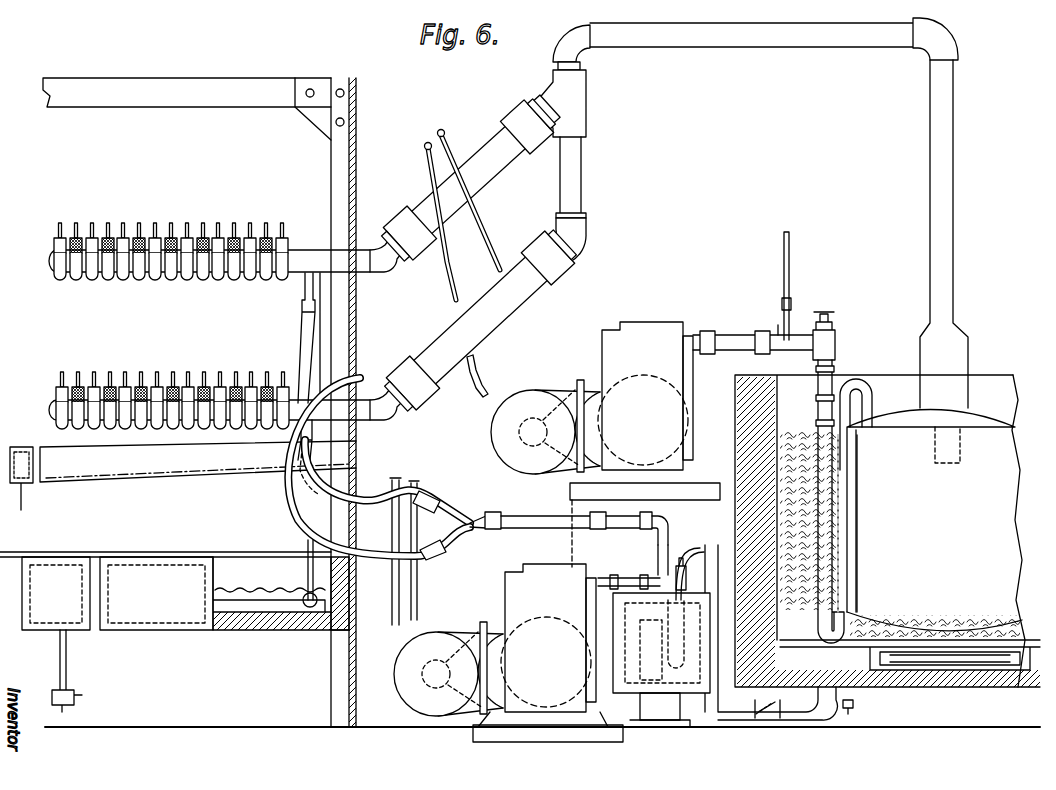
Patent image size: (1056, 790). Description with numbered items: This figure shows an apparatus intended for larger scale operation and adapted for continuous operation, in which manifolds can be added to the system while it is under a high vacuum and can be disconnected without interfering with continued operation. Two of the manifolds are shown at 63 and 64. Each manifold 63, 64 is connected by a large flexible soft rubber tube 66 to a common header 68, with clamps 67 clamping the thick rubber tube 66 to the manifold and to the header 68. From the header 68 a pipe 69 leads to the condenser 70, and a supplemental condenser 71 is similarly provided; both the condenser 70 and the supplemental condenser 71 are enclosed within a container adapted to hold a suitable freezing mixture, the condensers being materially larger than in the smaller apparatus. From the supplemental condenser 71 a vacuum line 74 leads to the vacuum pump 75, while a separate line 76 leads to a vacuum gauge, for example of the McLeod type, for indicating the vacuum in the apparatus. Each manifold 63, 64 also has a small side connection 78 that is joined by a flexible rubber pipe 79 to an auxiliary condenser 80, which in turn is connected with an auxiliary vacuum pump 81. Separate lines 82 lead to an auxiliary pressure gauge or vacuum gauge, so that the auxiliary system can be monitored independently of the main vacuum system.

The manifold 63 is at (50, 272).
The manifold 64 is at (54, 406).
The flexible soft rubber tube 66 is at (484, 150).
The clamp 67 is at (510, 117).
The header 68 is at (703, 40).
The pipe 69 is at (946, 198).
The condenser 70 is at (897, 442).
The supplemental condenser 71 is at (830, 522).
The vacuum line 74 is at (753, 328).
The vacuum pump 75 is at (644, 326).
The separate line 76 is at (792, 312).
The small side connection 78 is at (304, 286).
The flexible rubber pipe 79 is at (413, 490).
The auxiliary condenser 80 is at (651, 598).
The auxiliary vacuum pump 81 is at (544, 572).
The separate line 82 is at (698, 546).